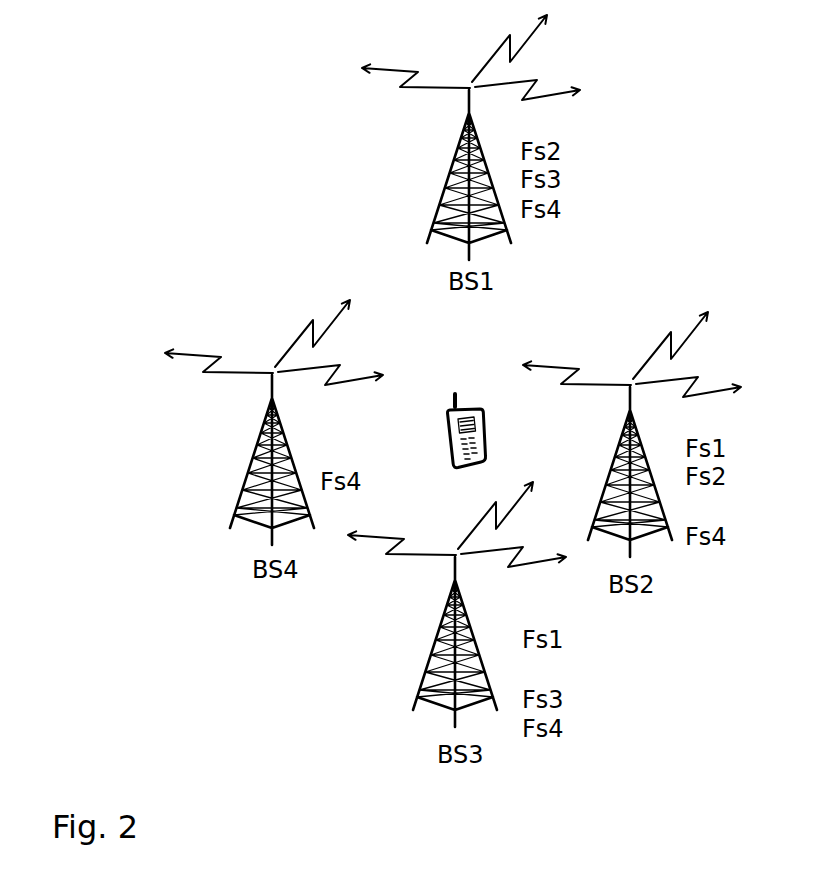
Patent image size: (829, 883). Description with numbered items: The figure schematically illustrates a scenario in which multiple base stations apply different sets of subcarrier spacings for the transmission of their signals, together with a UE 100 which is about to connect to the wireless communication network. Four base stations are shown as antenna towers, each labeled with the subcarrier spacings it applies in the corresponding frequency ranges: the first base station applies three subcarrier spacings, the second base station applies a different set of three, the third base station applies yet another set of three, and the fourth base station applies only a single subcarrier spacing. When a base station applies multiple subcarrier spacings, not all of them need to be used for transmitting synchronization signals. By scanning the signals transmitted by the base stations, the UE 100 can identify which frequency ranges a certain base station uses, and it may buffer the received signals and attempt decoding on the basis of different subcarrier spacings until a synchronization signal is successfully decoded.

The UE 100 is at (445, 433).